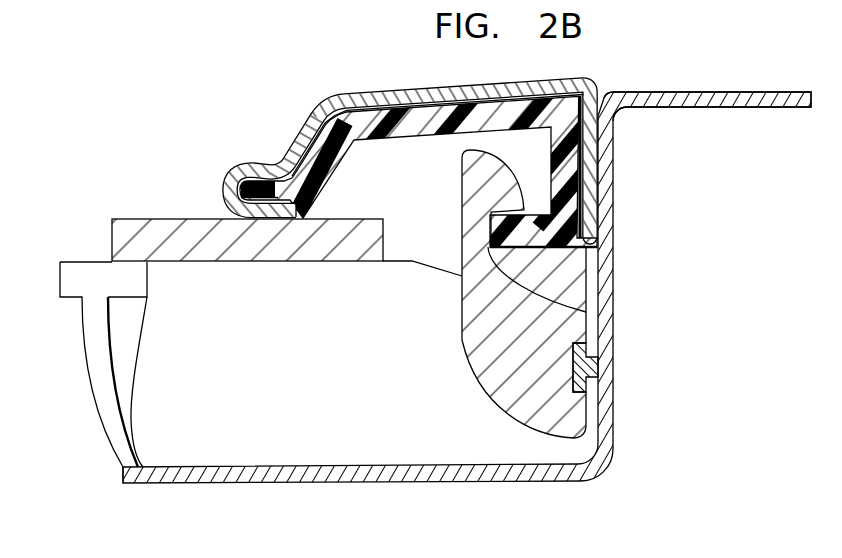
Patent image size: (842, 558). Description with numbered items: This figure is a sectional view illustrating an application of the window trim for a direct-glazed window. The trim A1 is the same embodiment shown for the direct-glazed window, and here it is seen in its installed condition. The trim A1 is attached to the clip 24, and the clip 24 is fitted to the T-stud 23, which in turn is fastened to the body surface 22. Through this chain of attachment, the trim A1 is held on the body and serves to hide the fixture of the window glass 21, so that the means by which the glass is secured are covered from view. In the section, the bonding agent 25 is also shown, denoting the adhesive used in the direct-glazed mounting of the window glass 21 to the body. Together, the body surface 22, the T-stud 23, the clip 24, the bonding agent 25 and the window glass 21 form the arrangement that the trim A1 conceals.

The window glass 21 is at (187, 231).
The body surface 22 is at (690, 107).
The T-stud 23 is at (598, 365).
The clip 24 is at (573, 312).
The bonding agent 25 is at (452, 450).
The trim A1 is at (338, 84).